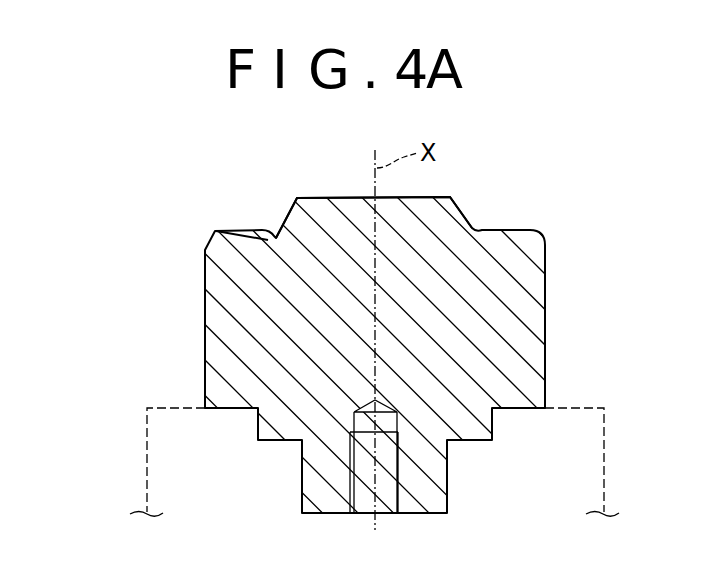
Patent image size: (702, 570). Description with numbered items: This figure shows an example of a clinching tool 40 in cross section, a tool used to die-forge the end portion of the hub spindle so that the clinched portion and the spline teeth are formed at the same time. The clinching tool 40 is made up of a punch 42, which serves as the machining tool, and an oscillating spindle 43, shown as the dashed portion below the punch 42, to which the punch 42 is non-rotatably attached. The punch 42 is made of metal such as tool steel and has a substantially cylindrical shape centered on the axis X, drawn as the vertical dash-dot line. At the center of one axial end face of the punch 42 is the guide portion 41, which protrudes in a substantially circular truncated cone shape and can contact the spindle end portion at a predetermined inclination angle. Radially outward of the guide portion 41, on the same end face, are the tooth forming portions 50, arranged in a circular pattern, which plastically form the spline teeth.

The clinching tool 40 is at (84, 331).
The guide portion 41 is at (297, 205).
The punch 42 is at (192, 353).
The oscillating spindle 43 is at (147, 453).
The tooth forming portions 50 is at (236, 237).